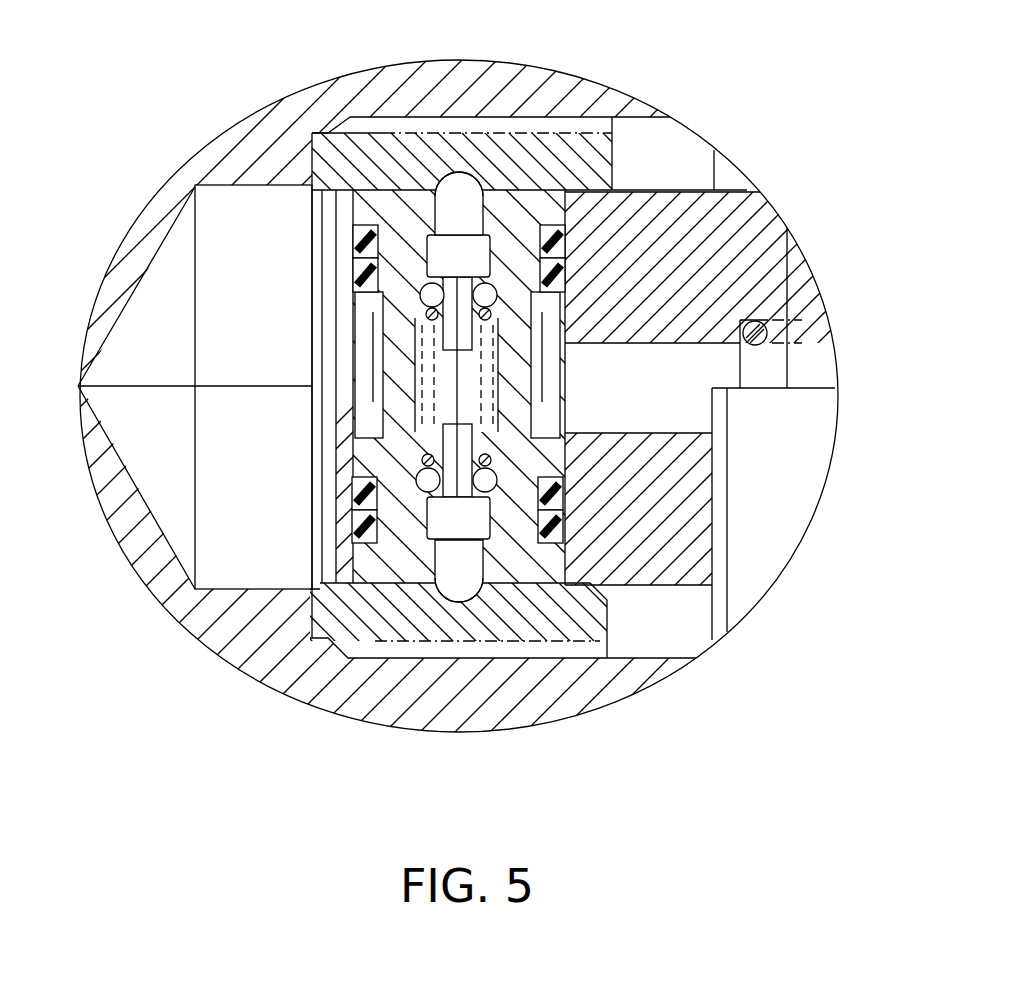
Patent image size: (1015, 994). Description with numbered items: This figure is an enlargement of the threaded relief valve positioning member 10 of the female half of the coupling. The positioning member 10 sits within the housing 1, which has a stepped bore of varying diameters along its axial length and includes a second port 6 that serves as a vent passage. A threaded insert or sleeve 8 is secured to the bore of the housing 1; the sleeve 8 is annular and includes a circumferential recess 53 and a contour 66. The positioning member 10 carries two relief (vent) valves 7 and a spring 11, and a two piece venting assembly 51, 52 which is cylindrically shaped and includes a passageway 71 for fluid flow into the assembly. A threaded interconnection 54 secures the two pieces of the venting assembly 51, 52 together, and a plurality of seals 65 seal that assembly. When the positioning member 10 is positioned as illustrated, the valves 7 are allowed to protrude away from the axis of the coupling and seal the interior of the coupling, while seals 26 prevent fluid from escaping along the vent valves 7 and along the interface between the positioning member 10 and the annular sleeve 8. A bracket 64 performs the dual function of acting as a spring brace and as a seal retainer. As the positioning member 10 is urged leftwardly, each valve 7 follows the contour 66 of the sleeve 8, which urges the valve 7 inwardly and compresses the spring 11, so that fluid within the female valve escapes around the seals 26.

The housing 1 is at (500, 698).
The second port 6 is at (97, 347).
The relief valve 7 is at (607, 178).
The threaded insert or sleeve 8 is at (600, 140).
The relief valve positioning member 10 is at (667, 532).
The spring 11 is at (487, 372).
The seals 26 is at (497, 292).
The two piece venting assembly 51 is at (520, 260).
The two piece venting assembly 52 is at (312, 640).
The circumferential recess 53 is at (443, 172).
The threaded interconnection 54 is at (385, 400).
The bracket 64 is at (548, 352).
The seals 65 is at (565, 490).
The contour 66 is at (463, 220).
The passageway 71 is at (510, 440).